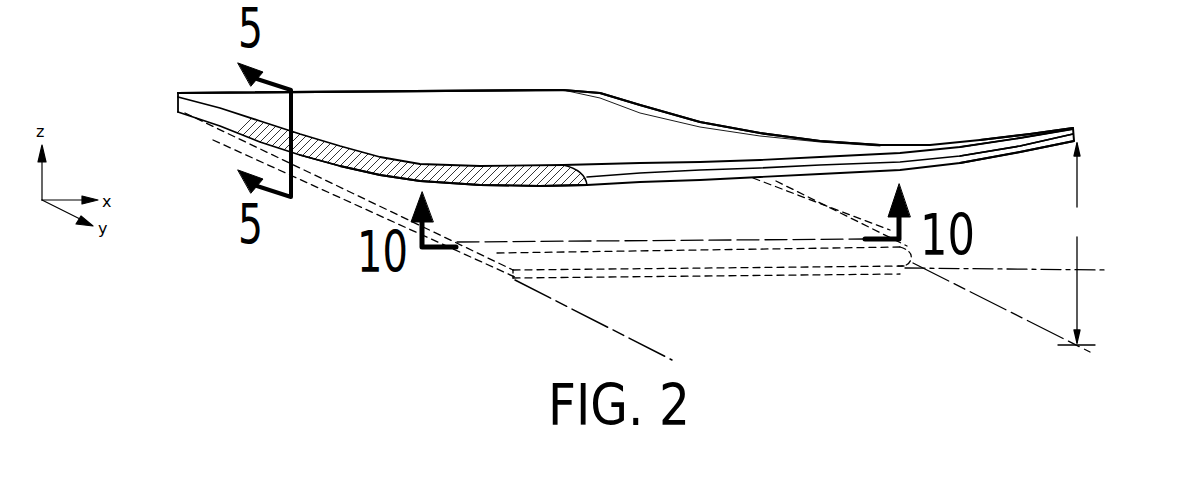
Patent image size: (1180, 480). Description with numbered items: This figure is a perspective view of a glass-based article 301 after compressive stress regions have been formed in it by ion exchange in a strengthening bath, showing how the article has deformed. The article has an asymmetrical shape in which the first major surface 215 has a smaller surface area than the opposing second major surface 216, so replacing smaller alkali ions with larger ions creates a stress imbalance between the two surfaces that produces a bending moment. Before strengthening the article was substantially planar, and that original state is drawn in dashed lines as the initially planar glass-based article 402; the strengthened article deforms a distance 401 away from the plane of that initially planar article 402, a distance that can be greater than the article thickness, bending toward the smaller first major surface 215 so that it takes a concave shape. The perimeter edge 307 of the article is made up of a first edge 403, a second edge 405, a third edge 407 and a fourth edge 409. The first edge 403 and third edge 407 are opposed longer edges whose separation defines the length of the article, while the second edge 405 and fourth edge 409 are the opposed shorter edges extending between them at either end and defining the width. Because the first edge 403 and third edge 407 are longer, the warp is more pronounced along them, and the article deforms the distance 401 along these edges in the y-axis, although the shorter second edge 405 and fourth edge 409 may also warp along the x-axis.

The first major surface 215 is at (703, 121).
The second edge 405 is at (465, 89).
The third edge 407 is at (632, 103).
The glass-based article 301 is at (1090, 118).
The fourth edge 409 is at (934, 157).
The edge 307 is at (1012, 150).
The first edge 403 is at (190, 113).
The second major surface 216 is at (361, 178).
The distance 401 is at (1077, 244).
The initially planar glass-based article 402 is at (489, 278).